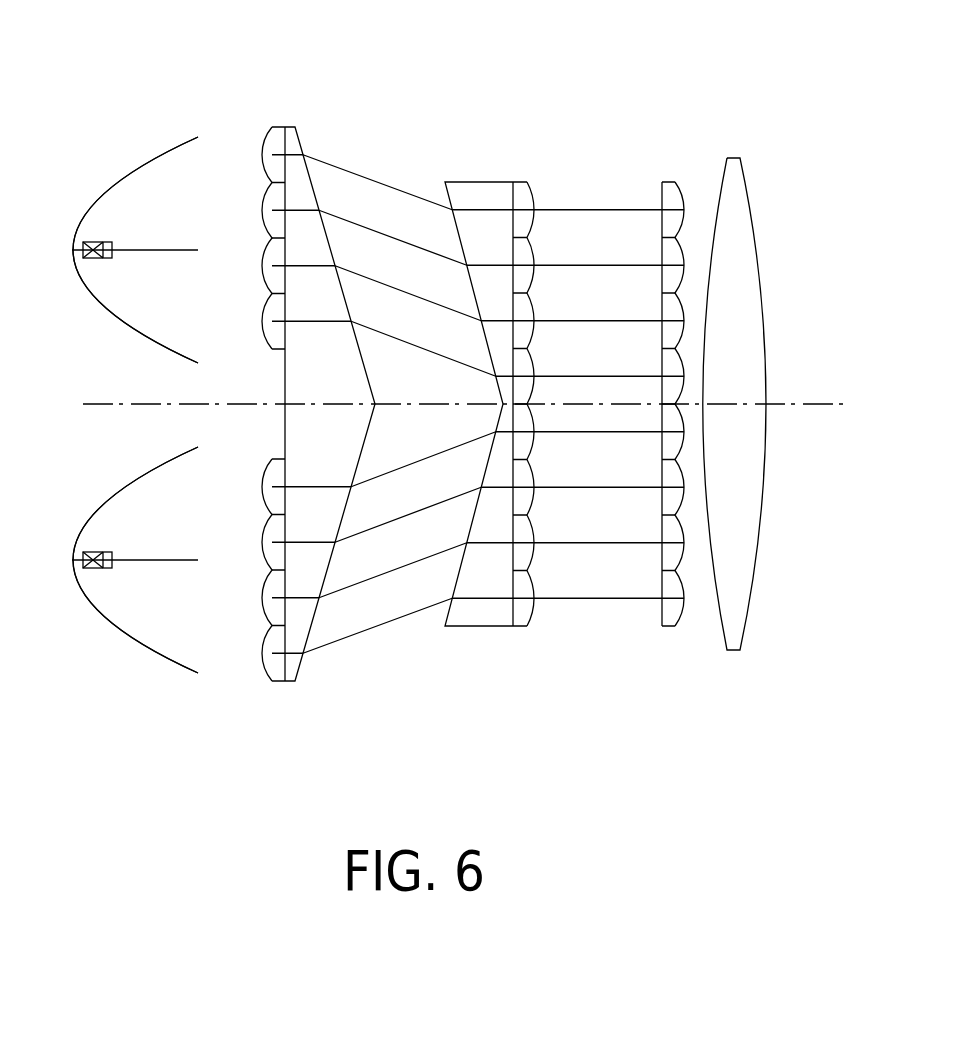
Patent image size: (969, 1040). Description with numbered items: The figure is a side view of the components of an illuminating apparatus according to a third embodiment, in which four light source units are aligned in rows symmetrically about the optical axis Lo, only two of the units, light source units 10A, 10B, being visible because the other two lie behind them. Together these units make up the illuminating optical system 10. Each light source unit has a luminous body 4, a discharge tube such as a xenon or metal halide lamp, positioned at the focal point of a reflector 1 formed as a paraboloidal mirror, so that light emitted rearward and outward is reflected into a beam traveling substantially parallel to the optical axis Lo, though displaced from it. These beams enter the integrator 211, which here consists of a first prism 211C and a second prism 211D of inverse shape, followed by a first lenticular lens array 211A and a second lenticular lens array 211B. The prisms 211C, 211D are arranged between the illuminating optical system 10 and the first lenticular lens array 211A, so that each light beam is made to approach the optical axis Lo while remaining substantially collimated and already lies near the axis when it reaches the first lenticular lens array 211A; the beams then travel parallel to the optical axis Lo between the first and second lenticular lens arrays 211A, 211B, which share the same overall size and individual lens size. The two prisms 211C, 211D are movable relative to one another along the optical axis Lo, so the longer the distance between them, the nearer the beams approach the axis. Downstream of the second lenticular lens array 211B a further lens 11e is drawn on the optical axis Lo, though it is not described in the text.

The reflector 1 is at (172, 150).
The luminous body 4 is at (98, 242).
The illuminating optical system 10 is at (45, 322).
The light source unit 10A is at (110, 181).
The light source unit 10B is at (110, 491).
The condenser lens 11e is at (740, 158).
The integrator 211 is at (596, 58).
The first lenticular lens array 211A is at (524, 182).
The second lenticular lens array 211B is at (662, 180).
The first prism 211C is at (287, 127).
The second prism 211D is at (452, 182).
The optical axis Lo is at (795, 402).